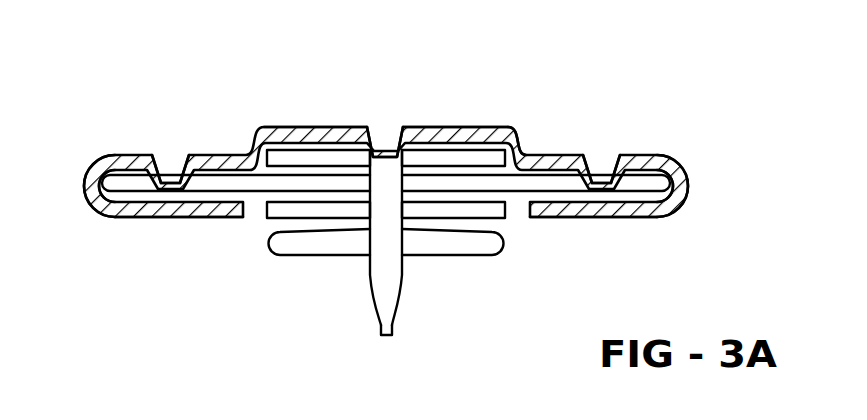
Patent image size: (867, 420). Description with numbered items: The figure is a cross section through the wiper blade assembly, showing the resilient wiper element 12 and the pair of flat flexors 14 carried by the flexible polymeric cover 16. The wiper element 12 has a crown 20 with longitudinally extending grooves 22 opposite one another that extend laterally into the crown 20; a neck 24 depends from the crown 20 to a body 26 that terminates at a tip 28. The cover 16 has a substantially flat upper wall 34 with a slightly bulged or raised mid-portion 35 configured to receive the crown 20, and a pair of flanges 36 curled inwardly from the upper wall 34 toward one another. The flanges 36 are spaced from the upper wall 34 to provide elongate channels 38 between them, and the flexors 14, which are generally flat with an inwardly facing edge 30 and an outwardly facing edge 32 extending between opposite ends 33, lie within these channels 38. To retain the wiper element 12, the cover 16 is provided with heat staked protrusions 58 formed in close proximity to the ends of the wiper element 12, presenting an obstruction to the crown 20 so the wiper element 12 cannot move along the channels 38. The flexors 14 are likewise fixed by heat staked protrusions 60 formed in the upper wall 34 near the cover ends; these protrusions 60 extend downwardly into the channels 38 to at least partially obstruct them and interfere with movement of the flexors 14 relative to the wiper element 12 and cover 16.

The wiper element 12 is at (404, 363).
The flexor 14 is at (92, 182).
The cover 16 is at (522, 140).
The crown 20 is at (392, 220).
The groove 22 is at (325, 166).
The neck 24 is at (379, 276).
The body 26 is at (365, 268).
The tip 28 is at (388, 337).
The inwardly facing edge 30 is at (362, 180).
The outwardly facing edge 32 is at (104, 187).
The end 33 is at (232, 183).
The upper wall 34 is at (323, 126).
The raised mid-portion 35 is at (508, 127).
The flange 36 is at (133, 220).
The channel 38 is at (112, 172).
The heat staked protrusion 58 is at (382, 145).
The heat staked protrusion 60 is at (168, 176).